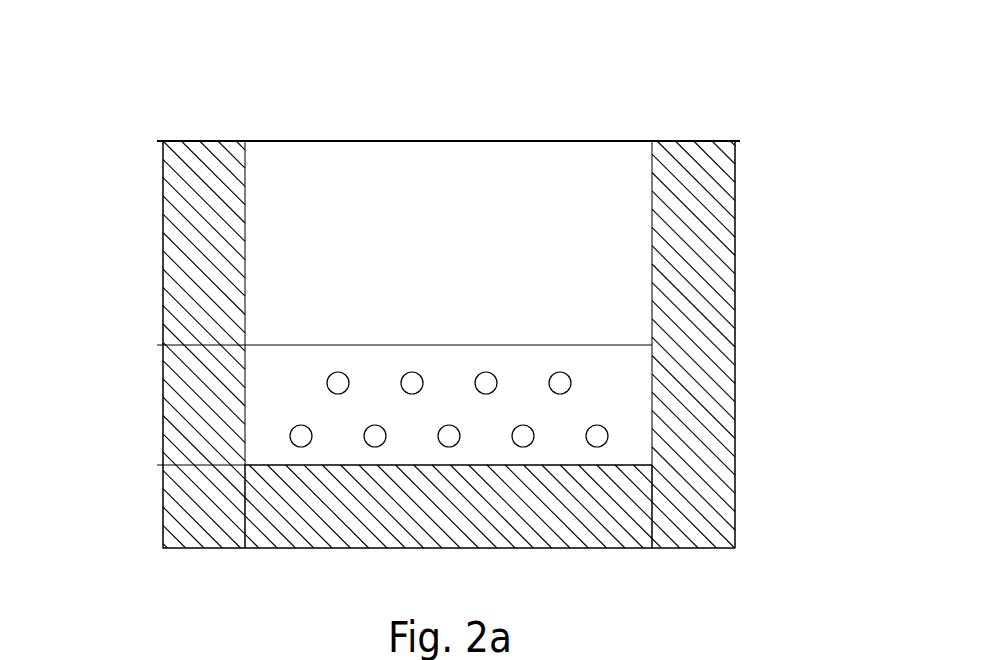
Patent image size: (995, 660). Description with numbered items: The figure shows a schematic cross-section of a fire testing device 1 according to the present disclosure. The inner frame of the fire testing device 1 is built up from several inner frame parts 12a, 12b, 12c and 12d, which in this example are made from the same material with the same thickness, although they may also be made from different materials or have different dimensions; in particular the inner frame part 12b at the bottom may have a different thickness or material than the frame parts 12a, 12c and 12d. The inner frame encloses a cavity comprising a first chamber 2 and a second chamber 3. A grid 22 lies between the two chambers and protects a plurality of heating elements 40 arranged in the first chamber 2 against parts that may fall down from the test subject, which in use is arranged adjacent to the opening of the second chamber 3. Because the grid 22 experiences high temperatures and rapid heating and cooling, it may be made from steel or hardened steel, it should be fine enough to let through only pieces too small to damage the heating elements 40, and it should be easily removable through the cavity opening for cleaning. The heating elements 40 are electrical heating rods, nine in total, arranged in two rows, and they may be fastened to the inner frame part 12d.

The fire testing device 1 is at (83, 57).
The first chamber 2 is at (493, 396).
The second chamber 3 is at (448, 223).
The inner frame part 12a is at (757, 344).
The inner frame part 12b is at (403, 527).
The inner frame part 12c is at (148, 344).
The inner frame part 12d is at (448, 125).
The grid 22 is at (404, 296).
The heating elements 40 is at (570, 483).